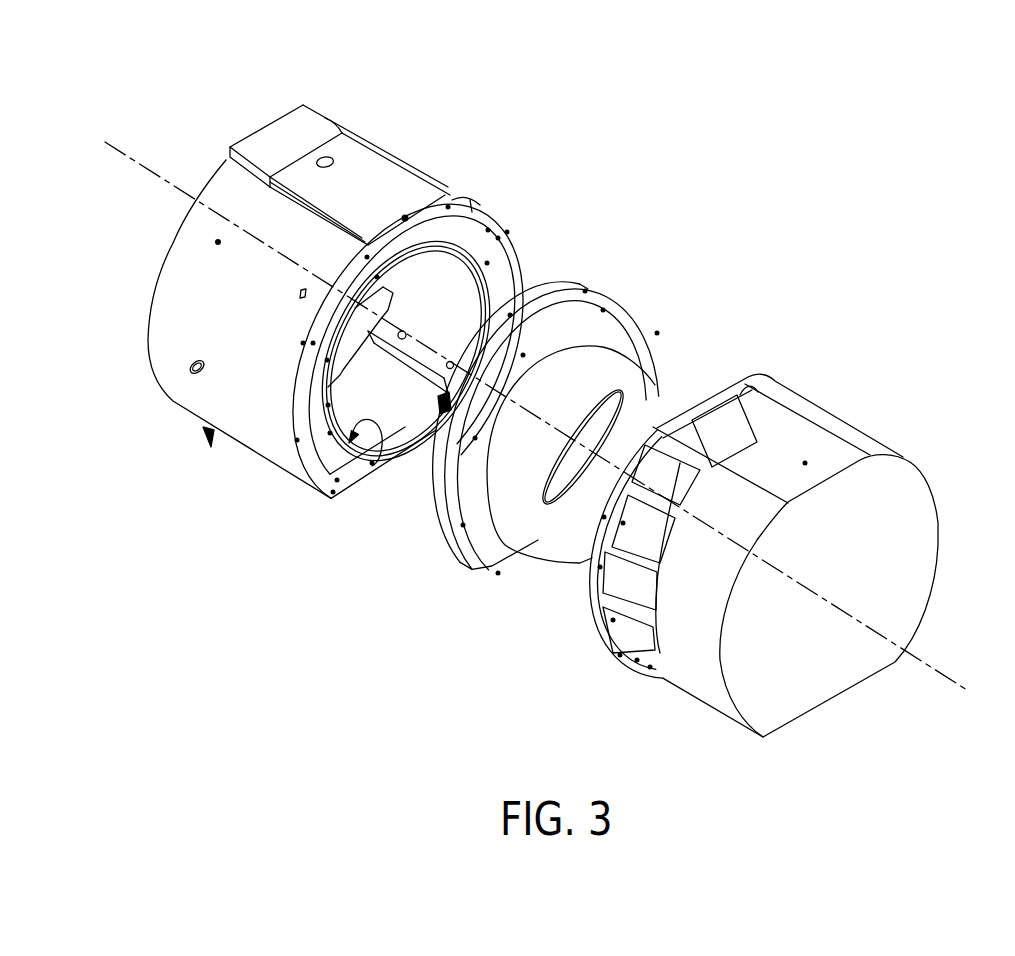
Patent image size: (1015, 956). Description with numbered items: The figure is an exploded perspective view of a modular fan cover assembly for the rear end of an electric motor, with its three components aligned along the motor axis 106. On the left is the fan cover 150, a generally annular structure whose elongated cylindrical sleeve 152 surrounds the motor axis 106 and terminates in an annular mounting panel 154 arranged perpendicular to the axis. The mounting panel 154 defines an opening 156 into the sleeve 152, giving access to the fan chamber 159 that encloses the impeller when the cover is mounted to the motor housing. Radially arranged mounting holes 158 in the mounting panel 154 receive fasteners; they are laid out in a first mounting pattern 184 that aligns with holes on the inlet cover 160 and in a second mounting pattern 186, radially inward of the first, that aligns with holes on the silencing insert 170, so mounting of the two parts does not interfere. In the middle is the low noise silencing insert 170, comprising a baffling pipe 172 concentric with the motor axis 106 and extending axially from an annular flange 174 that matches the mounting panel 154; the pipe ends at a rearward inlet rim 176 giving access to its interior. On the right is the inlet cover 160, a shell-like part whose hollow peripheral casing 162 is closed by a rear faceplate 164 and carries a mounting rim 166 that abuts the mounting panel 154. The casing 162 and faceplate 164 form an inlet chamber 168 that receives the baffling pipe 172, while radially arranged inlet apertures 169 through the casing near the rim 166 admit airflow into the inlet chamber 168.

The motor axis 106 is at (128, 155).
The fan cover 150 is at (418, 104).
The cylindrical sleeve 152 is at (183, 248).
The mounting panel 154 is at (503, 222).
The opening 156 is at (385, 470).
The mounting holes 158 is at (497, 237).
The fan chamber 159 is at (394, 427).
The inlet cover 160 is at (843, 372).
The peripheral casing 162 is at (838, 449).
The rear faceplate 164 is at (913, 563).
The mounting rim 166 is at (605, 645).
The inlet chamber 168 is at (618, 583).
The inlet apertures 169 is at (712, 432).
The silencing insert 170 is at (597, 240).
The baffling pipe 172 is at (612, 373).
The annular flange 174 is at (441, 545).
The inlet rim 176 is at (677, 402).
The first mounting pattern 184 is at (325, 468).
The second mounting pattern 186 is at (317, 428).